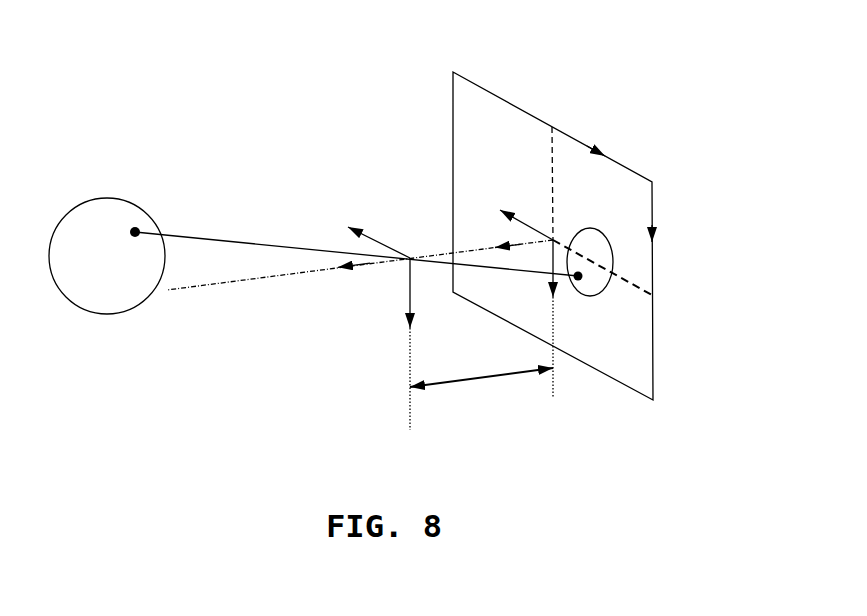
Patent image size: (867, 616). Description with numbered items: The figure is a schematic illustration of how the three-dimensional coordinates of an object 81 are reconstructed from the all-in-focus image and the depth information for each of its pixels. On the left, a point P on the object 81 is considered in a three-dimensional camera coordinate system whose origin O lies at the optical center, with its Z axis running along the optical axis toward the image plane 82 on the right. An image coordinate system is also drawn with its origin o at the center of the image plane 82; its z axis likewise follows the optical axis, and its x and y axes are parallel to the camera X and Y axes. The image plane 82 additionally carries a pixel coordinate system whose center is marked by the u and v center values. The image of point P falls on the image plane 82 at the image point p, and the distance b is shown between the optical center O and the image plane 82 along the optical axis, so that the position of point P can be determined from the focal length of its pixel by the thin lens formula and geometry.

The object 81 is at (131, 205).
The image plane 82 is at (569, 206).
The point on the object P is at (118, 230).
The origin of the camera coordinate system O is at (390, 311).
The origin of the image coordinate system o is at (523, 287).
The image point p is at (590, 262).
The baseline distance b is at (481, 390).